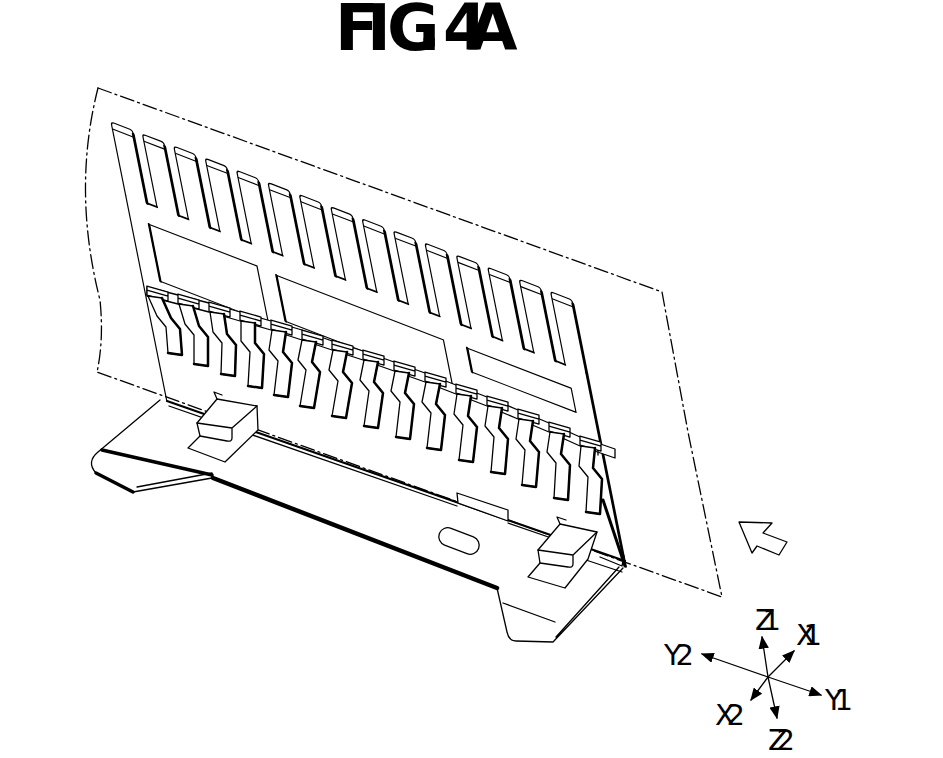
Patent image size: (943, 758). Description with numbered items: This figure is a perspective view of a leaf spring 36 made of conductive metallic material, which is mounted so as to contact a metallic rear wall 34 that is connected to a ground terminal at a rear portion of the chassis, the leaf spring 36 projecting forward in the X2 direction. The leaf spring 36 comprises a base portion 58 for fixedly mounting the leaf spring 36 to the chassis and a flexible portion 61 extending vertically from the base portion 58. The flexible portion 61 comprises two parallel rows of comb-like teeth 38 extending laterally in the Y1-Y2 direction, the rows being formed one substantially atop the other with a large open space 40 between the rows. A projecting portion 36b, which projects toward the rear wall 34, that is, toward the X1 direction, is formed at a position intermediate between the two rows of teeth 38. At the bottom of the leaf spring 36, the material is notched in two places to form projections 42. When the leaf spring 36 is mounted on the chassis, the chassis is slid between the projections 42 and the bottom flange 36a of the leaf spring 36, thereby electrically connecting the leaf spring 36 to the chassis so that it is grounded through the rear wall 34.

The leaf spring 36 is at (95, 67).
The rear wall 34 is at (523, 242).
The comb-like teeth 38 is at (565, 338).
The flexible portion 61 is at (616, 374).
The open space 40 is at (566, 411).
The projecting portion 36b is at (615, 457).
The projections 42 is at (575, 538).
The bottom flange 36a is at (382, 523).
The base portion 58 is at (630, 531).